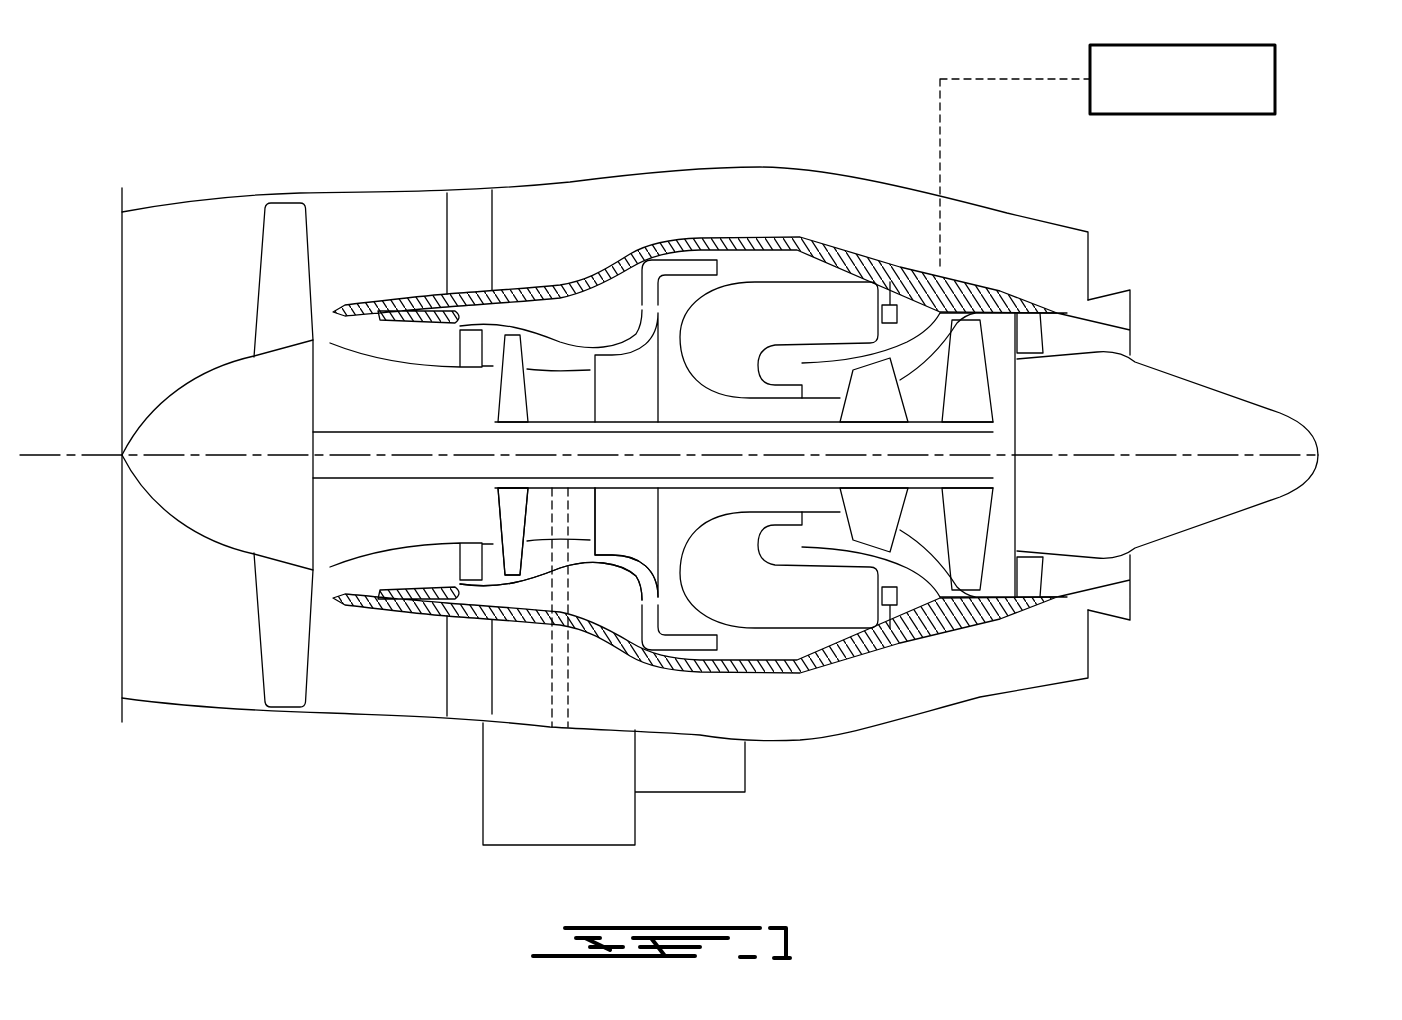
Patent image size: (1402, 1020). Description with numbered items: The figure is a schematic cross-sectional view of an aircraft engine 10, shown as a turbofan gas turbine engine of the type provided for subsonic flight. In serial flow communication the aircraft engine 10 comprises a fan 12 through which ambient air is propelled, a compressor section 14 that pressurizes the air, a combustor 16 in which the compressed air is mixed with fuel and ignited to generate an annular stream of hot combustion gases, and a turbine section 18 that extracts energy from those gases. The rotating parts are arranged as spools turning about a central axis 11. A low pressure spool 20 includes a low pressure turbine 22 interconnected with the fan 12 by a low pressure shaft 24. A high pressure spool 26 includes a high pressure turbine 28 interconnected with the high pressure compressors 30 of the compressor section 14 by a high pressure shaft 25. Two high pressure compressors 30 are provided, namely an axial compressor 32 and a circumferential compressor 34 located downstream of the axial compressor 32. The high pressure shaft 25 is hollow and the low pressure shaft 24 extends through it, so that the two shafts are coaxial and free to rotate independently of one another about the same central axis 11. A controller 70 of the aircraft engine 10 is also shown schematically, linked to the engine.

The aircraft engine 10 is at (300, 163).
The central axis 11 is at (1355, 455).
The fan 12 is at (280, 622).
The compressor section 14 is at (548, 347).
The combustor 16 is at (782, 305).
The turbine section 18 is at (922, 525).
The low pressure spool 20 is at (924, 425).
The low pressure turbine 22 is at (968, 563).
The low pressure shaft 24 is at (385, 478).
The high pressure shaft 25 is at (727, 487).
The high pressure spool 26 is at (565, 418).
The high pressure turbine 28 is at (873, 378).
The high pressure compressors 30 is at (510, 565).
The axial compressor 32 is at (510, 565).
The circumferential compressor 34 is at (627, 538).
The controller 70 is at (1182, 114).